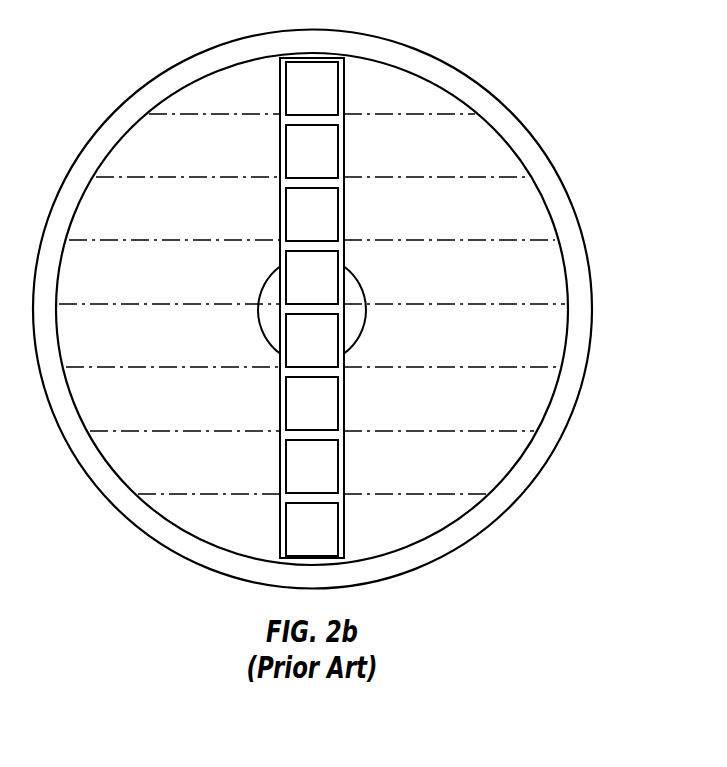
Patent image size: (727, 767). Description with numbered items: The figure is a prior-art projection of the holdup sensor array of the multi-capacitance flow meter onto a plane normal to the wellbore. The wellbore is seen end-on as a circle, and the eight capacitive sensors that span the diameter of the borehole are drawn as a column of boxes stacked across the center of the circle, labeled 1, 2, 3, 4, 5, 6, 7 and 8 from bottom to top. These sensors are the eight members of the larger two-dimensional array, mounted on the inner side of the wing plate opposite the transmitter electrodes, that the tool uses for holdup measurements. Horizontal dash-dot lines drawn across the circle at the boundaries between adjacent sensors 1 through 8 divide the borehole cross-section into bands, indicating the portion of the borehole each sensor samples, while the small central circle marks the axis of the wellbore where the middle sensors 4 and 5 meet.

The detector segment position 1 is at (312, 529).
The detector segment position 2 is at (312, 466).
The detector segment position 3 is at (312, 403).
The detector segment position 4 is at (312, 340).
The detector segment position 5 is at (312, 277).
The detector segment position 6 is at (312, 214).
The detector segment position 7 is at (312, 151).
The detector segment position 8 is at (312, 88).